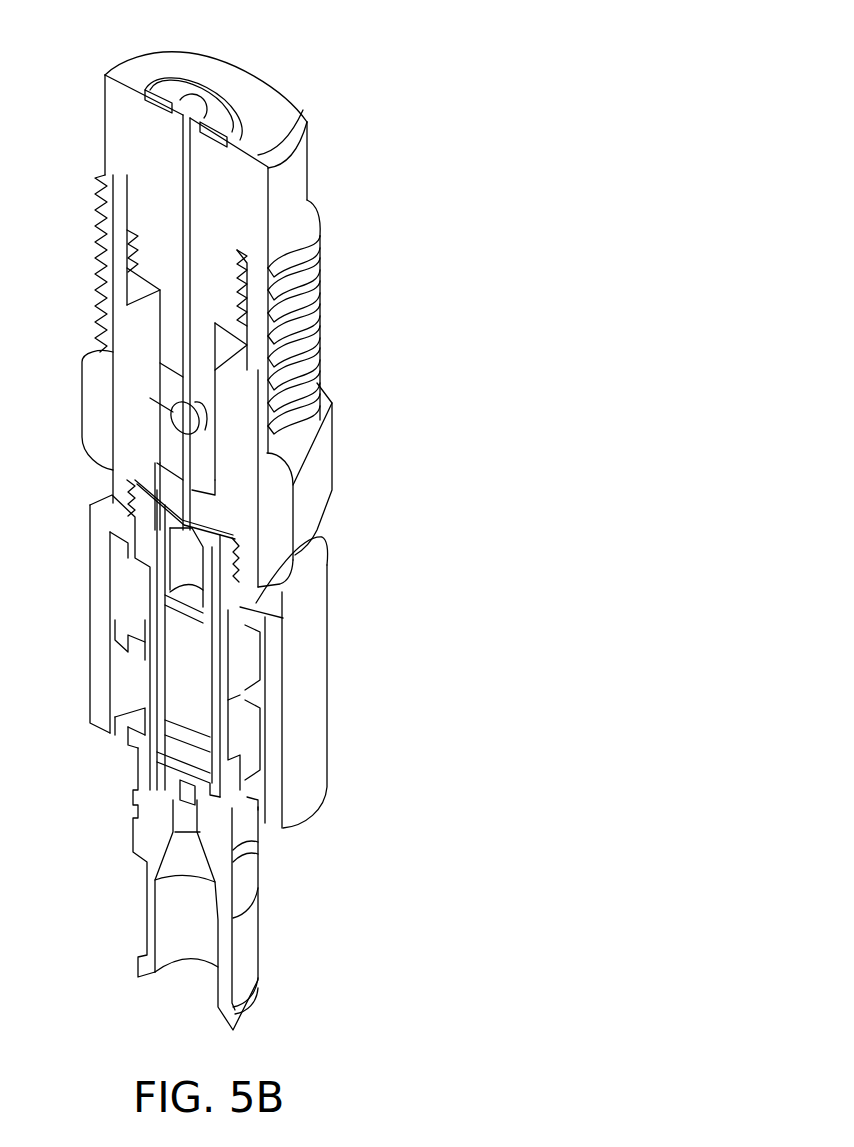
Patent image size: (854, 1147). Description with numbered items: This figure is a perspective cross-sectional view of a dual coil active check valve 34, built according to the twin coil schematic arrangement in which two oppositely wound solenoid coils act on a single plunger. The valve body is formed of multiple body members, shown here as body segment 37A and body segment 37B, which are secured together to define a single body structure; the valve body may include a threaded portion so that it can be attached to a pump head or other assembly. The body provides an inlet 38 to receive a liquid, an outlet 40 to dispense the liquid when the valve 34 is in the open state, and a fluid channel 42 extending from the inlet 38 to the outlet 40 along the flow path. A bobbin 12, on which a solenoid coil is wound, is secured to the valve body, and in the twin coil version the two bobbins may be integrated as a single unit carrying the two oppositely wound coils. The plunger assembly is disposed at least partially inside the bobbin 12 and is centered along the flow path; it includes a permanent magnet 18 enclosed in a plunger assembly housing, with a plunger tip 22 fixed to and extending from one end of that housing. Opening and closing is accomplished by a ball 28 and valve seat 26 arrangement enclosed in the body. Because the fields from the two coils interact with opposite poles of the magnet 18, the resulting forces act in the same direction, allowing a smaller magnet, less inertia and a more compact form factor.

The dual coil active check valve 34 is at (452, 116).
The outlet 40 is at (194, 104).
The fluid channel 42 is at (193, 217).
The body segment 37A is at (125, 328).
The valve seat 26 is at (170, 422).
The ball 28 is at (193, 427).
The plunger tip 22 is at (187, 458).
The bobbin 12 is at (145, 660).
The permanent magnet 18 is at (200, 691).
The inlet 38 is at (178, 791).
The body segment 37B is at (137, 832).